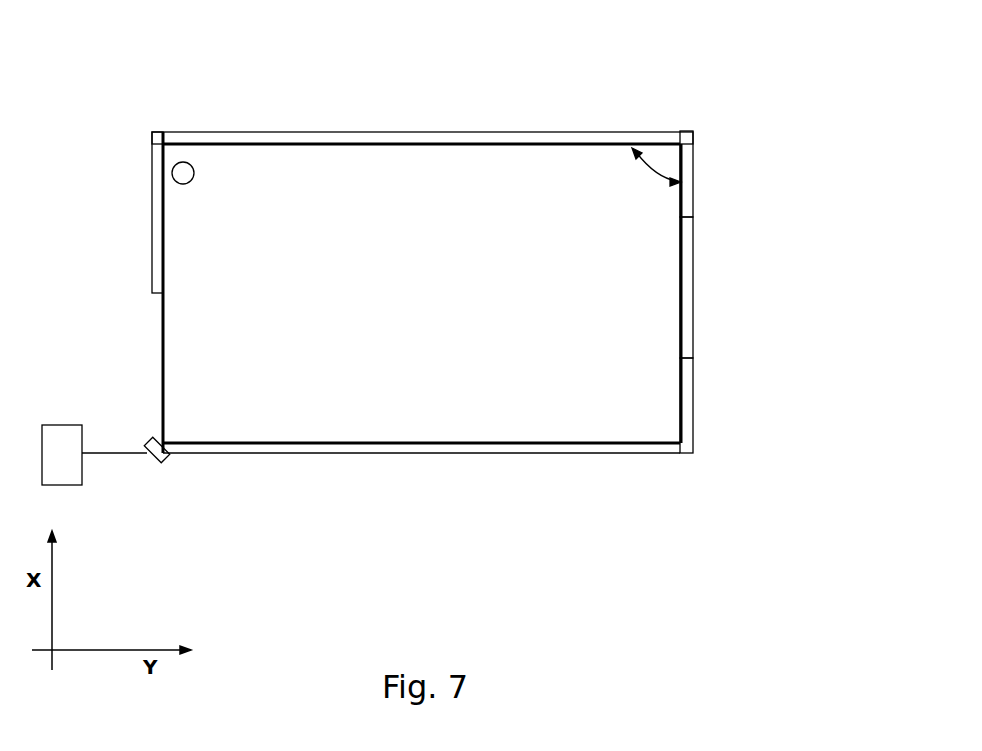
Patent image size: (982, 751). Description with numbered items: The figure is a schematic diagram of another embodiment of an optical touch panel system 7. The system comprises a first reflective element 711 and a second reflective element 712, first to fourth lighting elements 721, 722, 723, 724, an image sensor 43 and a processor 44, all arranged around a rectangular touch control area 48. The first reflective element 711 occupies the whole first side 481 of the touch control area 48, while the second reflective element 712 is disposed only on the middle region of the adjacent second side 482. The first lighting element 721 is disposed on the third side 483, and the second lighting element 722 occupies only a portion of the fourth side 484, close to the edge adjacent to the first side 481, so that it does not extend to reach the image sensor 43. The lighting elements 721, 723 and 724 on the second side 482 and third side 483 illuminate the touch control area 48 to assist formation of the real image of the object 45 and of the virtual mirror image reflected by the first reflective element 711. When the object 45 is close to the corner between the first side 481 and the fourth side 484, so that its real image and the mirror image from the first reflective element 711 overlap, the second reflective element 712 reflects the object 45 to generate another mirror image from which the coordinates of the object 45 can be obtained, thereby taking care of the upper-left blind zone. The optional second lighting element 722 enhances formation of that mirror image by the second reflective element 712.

The optical touch panel system 7 is at (709, 73).
The image sensor 43 is at (146, 460).
The processor 44 is at (63, 425).
The object 45 is at (172, 175).
The touch control area 48 is at (420, 428).
The first side 481 is at (333, 143).
The second side 482 is at (682, 245).
The third side 483 is at (310, 445).
The fourth side 484 is at (163, 325).
The first reflective element 711 is at (442, 138).
The second reflective element 712 is at (688, 305).
The first lighting element 721 is at (561, 444).
The second lighting element 722 is at (157, 234).
The third lighting element 723 is at (686, 163).
The fourth lighting element 724 is at (683, 420).